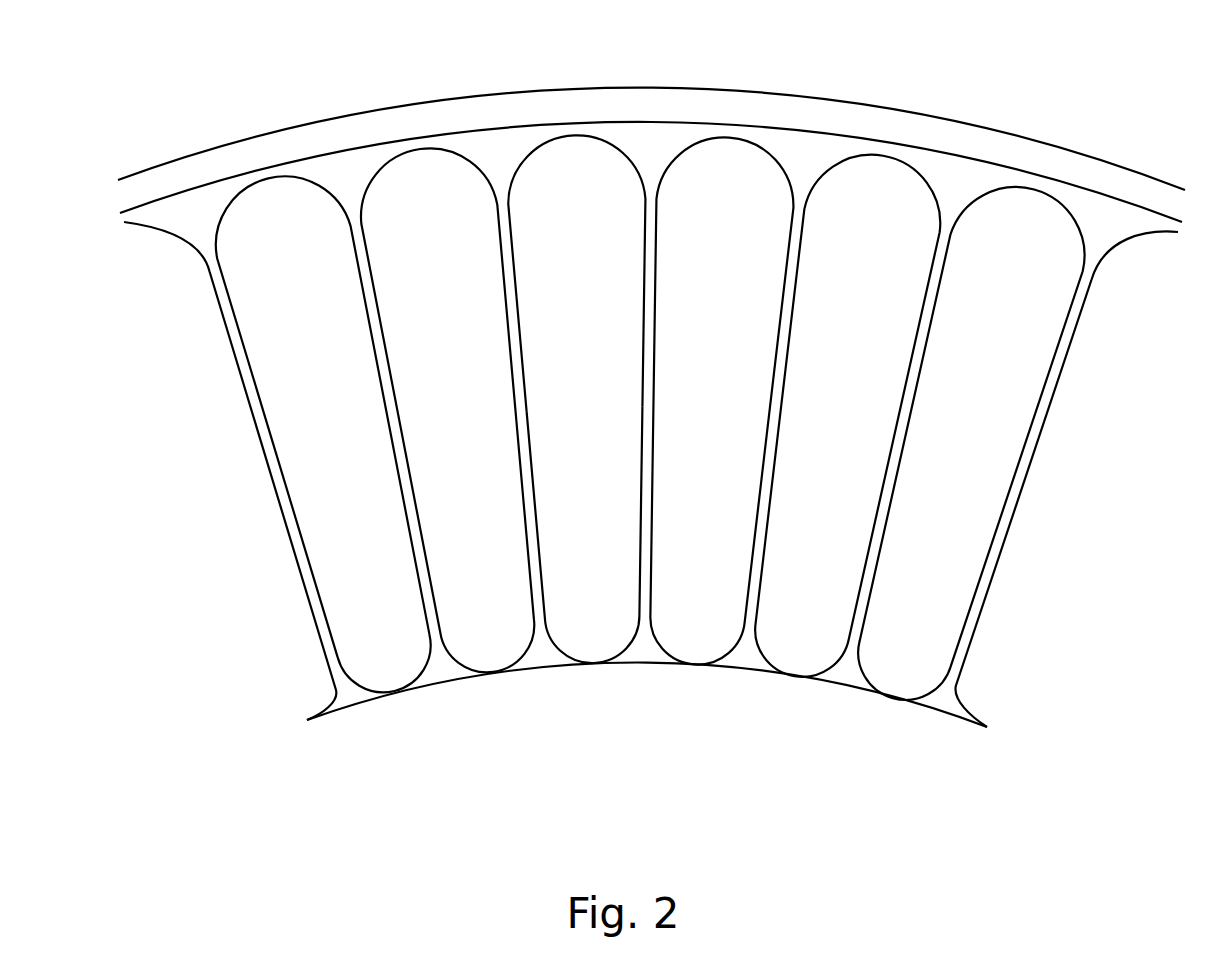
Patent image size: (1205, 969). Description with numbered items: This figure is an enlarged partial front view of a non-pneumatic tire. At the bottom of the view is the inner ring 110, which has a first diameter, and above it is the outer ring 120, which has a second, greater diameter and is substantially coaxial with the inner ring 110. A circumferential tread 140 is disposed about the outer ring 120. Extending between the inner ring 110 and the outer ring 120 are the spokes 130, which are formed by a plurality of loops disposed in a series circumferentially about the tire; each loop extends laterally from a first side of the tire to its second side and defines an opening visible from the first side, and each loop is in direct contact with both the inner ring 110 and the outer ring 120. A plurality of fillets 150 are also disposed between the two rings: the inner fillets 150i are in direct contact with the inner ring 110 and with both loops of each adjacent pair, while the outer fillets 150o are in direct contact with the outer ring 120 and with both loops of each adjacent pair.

The inner ring 110 is at (370, 712).
The outer ring 120 is at (651, 431).
The spokes 130 is at (919, 310).
The circumferential tread 140 is at (943, 130).
The fillets 150 is at (650, 431).
The outer fillets 150o is at (497, 149).
The inner fillets 150i is at (545, 648).